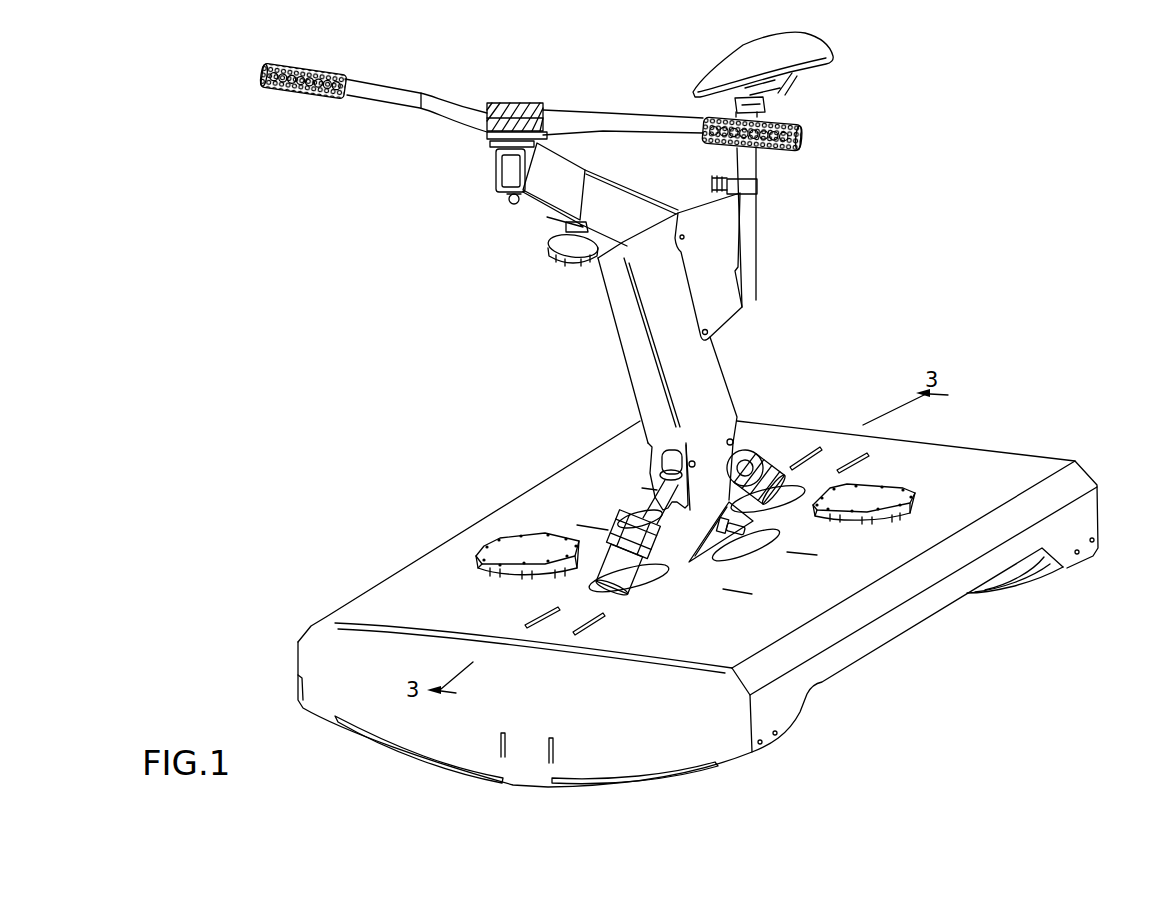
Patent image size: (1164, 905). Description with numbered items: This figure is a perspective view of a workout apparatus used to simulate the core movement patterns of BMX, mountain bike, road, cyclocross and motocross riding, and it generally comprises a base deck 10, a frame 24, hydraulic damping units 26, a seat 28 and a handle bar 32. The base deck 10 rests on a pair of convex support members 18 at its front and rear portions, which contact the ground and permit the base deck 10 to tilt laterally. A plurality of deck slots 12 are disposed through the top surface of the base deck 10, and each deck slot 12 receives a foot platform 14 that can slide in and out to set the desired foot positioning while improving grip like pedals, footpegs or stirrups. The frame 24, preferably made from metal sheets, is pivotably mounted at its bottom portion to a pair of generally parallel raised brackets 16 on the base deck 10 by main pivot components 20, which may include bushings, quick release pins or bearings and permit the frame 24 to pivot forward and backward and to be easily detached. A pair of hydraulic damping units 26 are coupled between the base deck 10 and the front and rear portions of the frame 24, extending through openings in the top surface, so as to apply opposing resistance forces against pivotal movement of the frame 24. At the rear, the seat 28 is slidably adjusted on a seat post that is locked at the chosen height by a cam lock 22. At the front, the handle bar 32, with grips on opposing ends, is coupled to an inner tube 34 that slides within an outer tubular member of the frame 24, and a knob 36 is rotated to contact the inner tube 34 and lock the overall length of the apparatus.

The base deck 10 is at (995, 468).
The deck slot 12 is at (733, 594).
The foot platform 14 is at (513, 547).
The raised bracket 16 is at (705, 543).
The convex support member 18 is at (1042, 573).
The main pivot component 20 is at (737, 528).
The cam lock 22 is at (766, 191).
The frame 24 is at (637, 347).
The hydraulic damping unit 26 is at (605, 556).
The seat 28 is at (823, 50).
The handle bar 32 is at (303, 92).
The inner tube 34 is at (537, 203).
The knob 36 is at (560, 253).